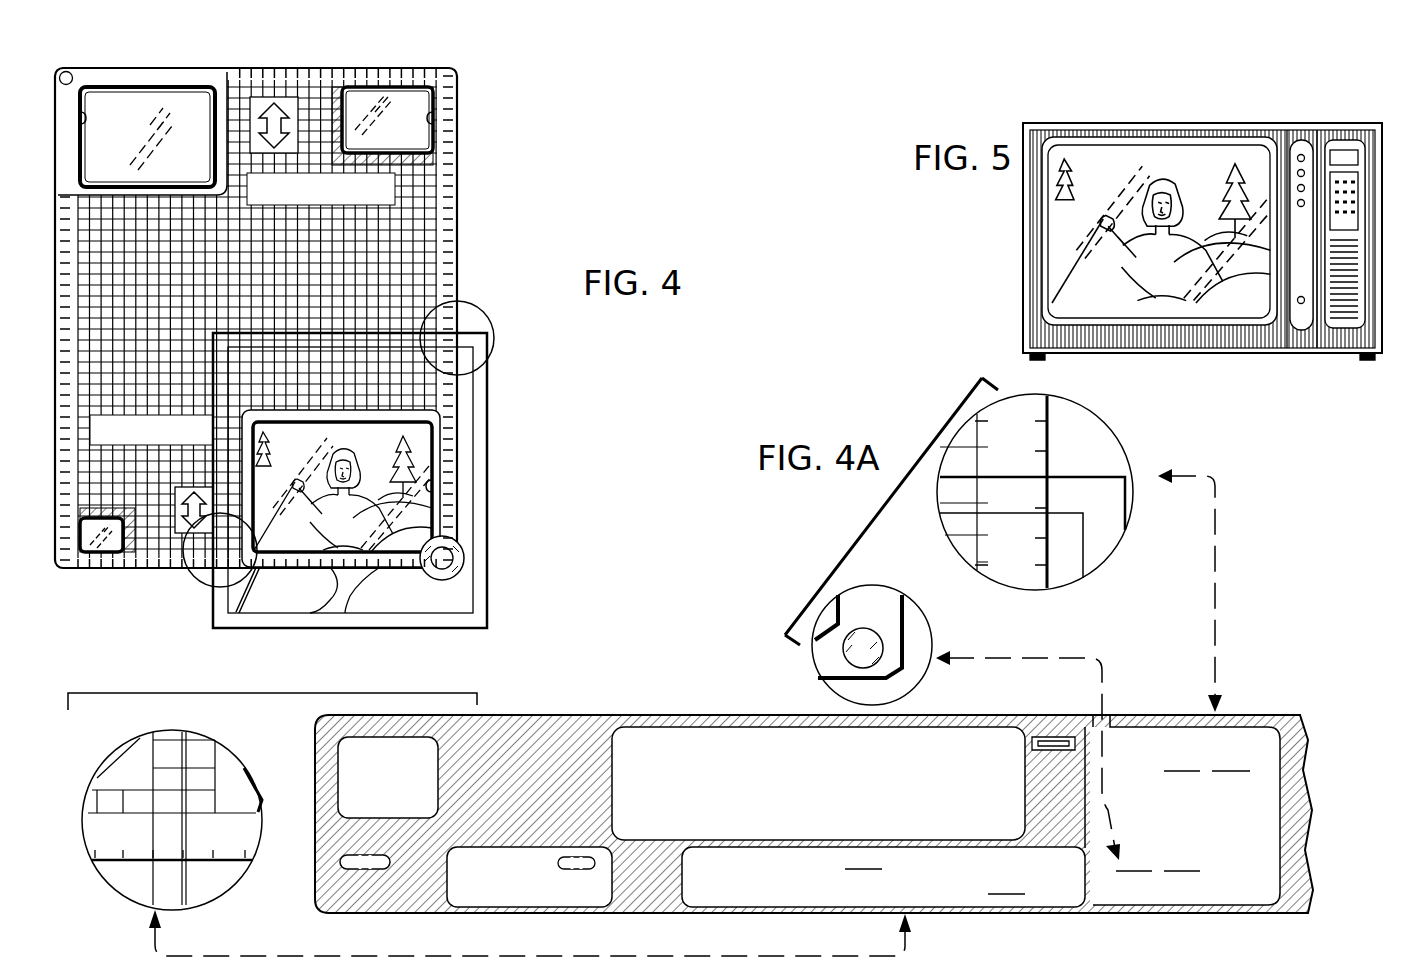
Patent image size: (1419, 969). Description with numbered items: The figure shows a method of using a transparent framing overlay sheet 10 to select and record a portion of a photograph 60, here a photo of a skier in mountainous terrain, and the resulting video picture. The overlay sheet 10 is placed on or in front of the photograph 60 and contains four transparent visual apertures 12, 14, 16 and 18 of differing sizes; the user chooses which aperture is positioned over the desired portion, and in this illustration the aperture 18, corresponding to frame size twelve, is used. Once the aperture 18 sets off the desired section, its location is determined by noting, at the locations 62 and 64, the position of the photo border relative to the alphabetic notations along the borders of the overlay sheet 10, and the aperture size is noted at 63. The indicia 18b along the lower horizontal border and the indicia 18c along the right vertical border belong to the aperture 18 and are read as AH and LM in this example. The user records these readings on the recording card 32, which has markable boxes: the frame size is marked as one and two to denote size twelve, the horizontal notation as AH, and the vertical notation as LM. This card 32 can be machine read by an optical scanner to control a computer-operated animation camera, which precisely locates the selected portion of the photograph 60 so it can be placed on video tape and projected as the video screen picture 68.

In FIG. 4, the framing overlay sheet 10 is at (495, 162).
In FIG. 4, the visual aperture 12 is at (80, 522).
In FIG. 4, the visual aperture 14 is at (434, 120).
In FIG. 4, the visual aperture 16 is at (82, 120).
In FIG. 4, the visual aperture 18 is at (433, 487).
In FIG. 4, the notation indicia 18b is at (115, 573).
In FIG. 4, the notation indicia 18c is at (458, 216).
In FIG. 4A, the notation indicia 18c is at (1035, 432).
In FIG. 4, the recording card 32 is at (602, 697).
In FIG. 4, the photograph 60 is at (498, 580).
In FIG. 4, the position notation location 62 is at (482, 300).
In FIG. 4A, the position notation location 62 is at (1092, 459).
In FIG. 4A, the aperture size notation 63 is at (930, 650).
In FIG. 4, the position notation location 64 is at (182, 583).
In FIG. 5, the video screen picture 68 is at (1150, 165).